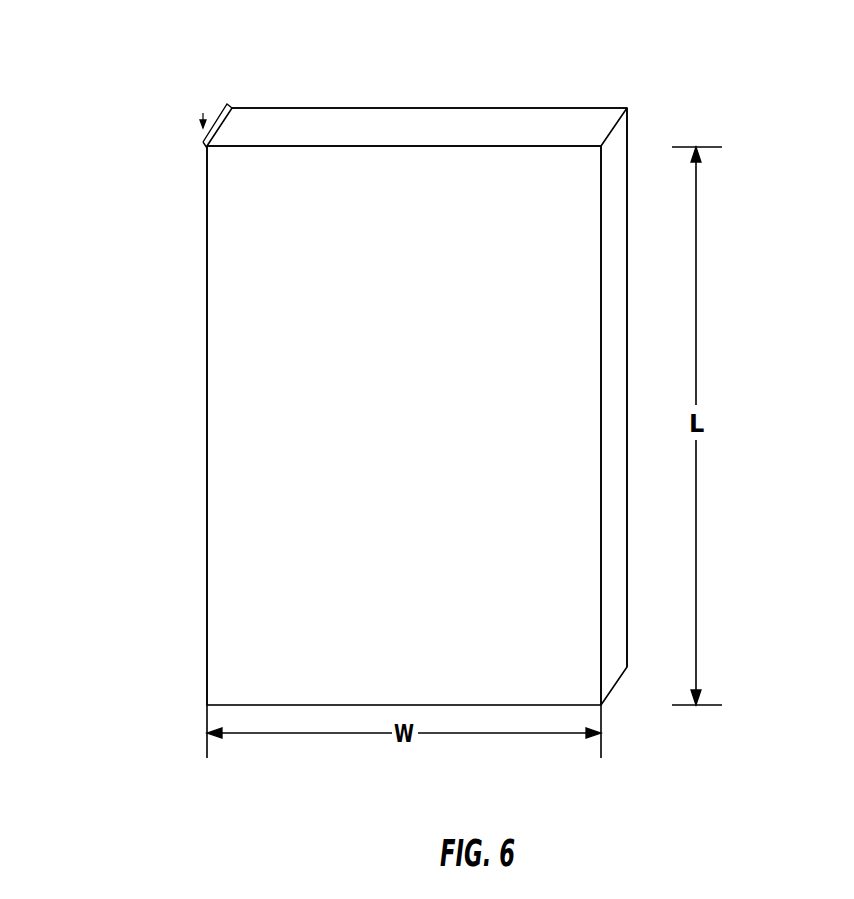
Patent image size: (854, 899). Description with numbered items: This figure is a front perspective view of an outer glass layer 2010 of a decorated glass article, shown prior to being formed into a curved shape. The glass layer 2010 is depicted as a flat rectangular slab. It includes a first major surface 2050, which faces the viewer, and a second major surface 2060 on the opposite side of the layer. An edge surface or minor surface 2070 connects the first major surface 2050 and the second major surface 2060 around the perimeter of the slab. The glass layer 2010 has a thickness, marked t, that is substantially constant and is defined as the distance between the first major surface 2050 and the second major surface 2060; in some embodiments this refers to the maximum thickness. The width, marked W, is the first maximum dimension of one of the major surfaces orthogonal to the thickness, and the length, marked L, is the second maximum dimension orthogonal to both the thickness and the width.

The outer glass layer 2010 is at (165, 263).
The first major surface 2050 is at (232, 566).
The second major surface 2060 is at (627, 323).
The edge surface or minor surface 2070 is at (568, 122).